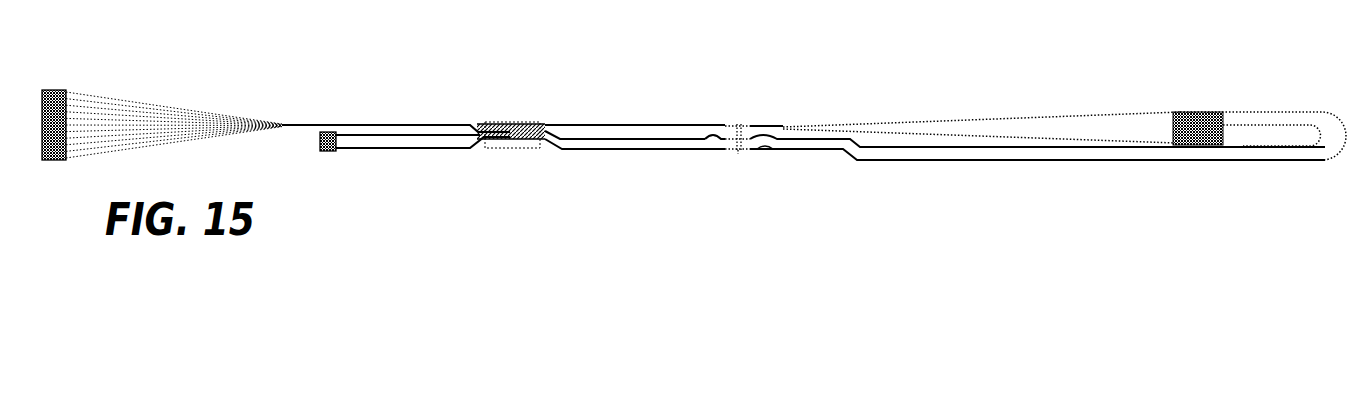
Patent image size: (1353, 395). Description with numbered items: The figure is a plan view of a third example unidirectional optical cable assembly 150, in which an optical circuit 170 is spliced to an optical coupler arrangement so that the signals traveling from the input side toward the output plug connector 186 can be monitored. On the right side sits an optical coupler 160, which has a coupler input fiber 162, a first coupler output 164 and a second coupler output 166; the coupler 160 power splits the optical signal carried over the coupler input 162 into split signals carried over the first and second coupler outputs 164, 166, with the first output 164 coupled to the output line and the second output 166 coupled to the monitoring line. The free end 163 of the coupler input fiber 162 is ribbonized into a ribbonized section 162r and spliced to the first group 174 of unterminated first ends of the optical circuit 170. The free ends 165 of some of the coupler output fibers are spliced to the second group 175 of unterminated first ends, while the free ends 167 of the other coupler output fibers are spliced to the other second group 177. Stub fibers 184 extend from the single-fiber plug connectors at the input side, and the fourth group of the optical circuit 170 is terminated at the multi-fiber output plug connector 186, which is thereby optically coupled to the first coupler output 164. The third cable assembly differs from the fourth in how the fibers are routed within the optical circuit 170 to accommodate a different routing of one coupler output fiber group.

The optical cable assembly 150 is at (619, 199).
The optical coupler 160 is at (1210, 110).
The coupler input fiber 162 is at (1082, 112).
The ribbonized section of coupler input fibers 162r is at (781, 125).
The free end of coupler input fiber 163 is at (750, 124).
The first coupler output 164 is at (1298, 111).
The free end of coupler output fiber 165 is at (765, 151).
The second coupler output 166 is at (1268, 125).
The free end of coupler output fiber 167 is at (773, 151).
The optical circuit 170 is at (492, 124).
The first group of unterminated first ends 174 is at (728, 124).
The second group of unterminated first ends 175 is at (713, 138).
The other second group of unterminated first ends 177 is at (727, 151).
The stub fibers 184 is at (737, 123).
The output plug connector 186 is at (740, 152).